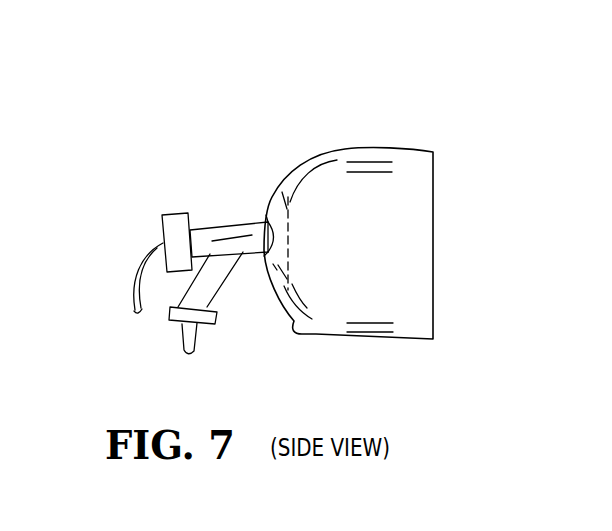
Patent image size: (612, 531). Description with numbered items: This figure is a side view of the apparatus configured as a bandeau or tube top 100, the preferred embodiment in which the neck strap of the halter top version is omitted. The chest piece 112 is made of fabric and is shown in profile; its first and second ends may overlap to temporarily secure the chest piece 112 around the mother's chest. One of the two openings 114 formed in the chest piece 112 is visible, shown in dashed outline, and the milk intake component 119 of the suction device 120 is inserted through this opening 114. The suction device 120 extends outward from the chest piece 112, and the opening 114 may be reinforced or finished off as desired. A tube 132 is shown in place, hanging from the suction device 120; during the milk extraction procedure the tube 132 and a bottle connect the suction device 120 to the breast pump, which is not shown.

The tube top 100 is at (278, 104).
The chest piece 112 is at (412, 315).
The opening 114 is at (289, 252).
The milk intake component 119 is at (285, 213).
The suction device 120 is at (157, 172).
The tube 132 is at (137, 318).